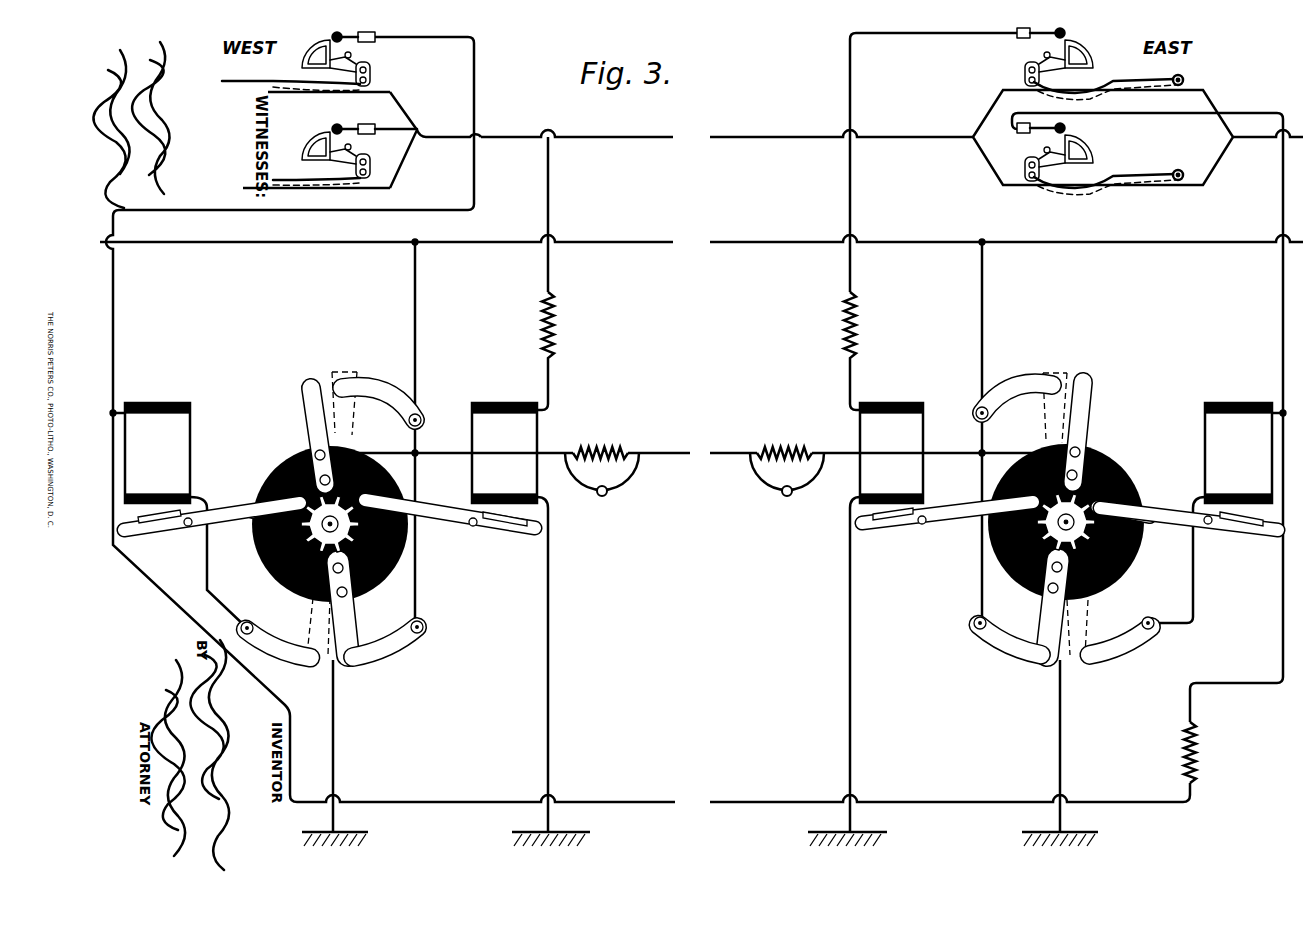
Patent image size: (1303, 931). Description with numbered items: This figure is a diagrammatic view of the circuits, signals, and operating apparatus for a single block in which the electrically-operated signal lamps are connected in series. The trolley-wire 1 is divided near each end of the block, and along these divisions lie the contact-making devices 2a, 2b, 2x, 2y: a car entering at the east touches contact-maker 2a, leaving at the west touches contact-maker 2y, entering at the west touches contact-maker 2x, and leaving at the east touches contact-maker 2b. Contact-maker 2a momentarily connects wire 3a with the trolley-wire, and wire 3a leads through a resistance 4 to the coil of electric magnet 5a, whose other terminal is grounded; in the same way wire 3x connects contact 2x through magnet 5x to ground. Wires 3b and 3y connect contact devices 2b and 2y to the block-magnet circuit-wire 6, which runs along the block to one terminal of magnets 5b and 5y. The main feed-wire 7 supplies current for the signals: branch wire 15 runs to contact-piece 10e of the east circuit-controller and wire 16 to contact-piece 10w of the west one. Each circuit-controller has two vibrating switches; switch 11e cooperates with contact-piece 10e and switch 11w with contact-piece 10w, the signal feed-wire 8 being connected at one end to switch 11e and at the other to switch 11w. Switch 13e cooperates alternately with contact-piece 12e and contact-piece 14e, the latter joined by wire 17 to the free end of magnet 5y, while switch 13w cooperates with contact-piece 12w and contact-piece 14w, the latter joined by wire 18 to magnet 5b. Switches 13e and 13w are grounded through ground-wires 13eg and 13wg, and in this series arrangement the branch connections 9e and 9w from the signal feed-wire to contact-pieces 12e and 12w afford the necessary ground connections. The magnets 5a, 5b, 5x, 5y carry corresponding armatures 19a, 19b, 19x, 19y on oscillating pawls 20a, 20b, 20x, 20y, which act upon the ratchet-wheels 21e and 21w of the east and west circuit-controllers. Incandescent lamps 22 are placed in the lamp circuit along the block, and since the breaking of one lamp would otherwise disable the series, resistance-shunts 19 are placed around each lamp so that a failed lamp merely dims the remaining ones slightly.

The trolley-wire 1 is at (608, 137).
The contact-making device 2a is at (1080, 64).
The contact-making device 2b is at (1090, 142).
The contact-making device 2x is at (347, 155).
The contact-making device 2y is at (314, 61).
The wire 3a is at (860, 85).
The wire 3b is at (1280, 292).
The wire 3x is at (519, 136).
The wire 3y is at (475, 75).
The resistance 4 is at (557, 335).
The electric magnet 5a is at (893, 420).
The electric magnet 5b is at (162, 420).
The electric magnet 5x is at (506, 430).
The electric magnet 5y is at (1245, 453).
The block-magnet circuit-wire 6 is at (663, 801).
The main feed-wire 7 is at (597, 242).
The signal feed-wire 8 is at (680, 450).
The branch connection 9e is at (978, 597).
The branch connection 9w is at (417, 595).
The contact-piece 10e is at (1022, 388).
The contact-piece 10w is at (376, 392).
The vibrating switch 11e is at (1086, 410).
The vibrating switch 11w is at (308, 388).
The contact-piece 12e is at (1000, 648).
The contact-piece 12w is at (393, 645).
The vibrating switch 13e is at (1043, 660).
The ground-wire 13eg is at (1065, 728).
The vibrating switch 13w is at (350, 607).
The ground-wire 13wg is at (337, 690).
The contact-piece 14e is at (1140, 635).
The contact-piece 14w is at (266, 625).
The branch wire 15 is at (985, 308).
The wire 16 is at (413, 312).
The wire 17 is at (1188, 585).
The wire 18 is at (205, 573).
The resistance 19 is at (604, 449).
The armature 19a is at (886, 525).
The armature 19b is at (152, 521).
The armature 19x is at (508, 526).
The armature 19y is at (1243, 525).
The oscillating pawl 20a is at (955, 520).
The oscillating pawl 20b is at (180, 528).
The oscillating pawl 20x is at (449, 521).
The oscillating pawl 20y is at (1160, 505).
The ratchet-wheel 21e is at (1152, 522).
The ratchet-wheel 21w is at (250, 505).
The incandescent lamp 22 is at (604, 497).